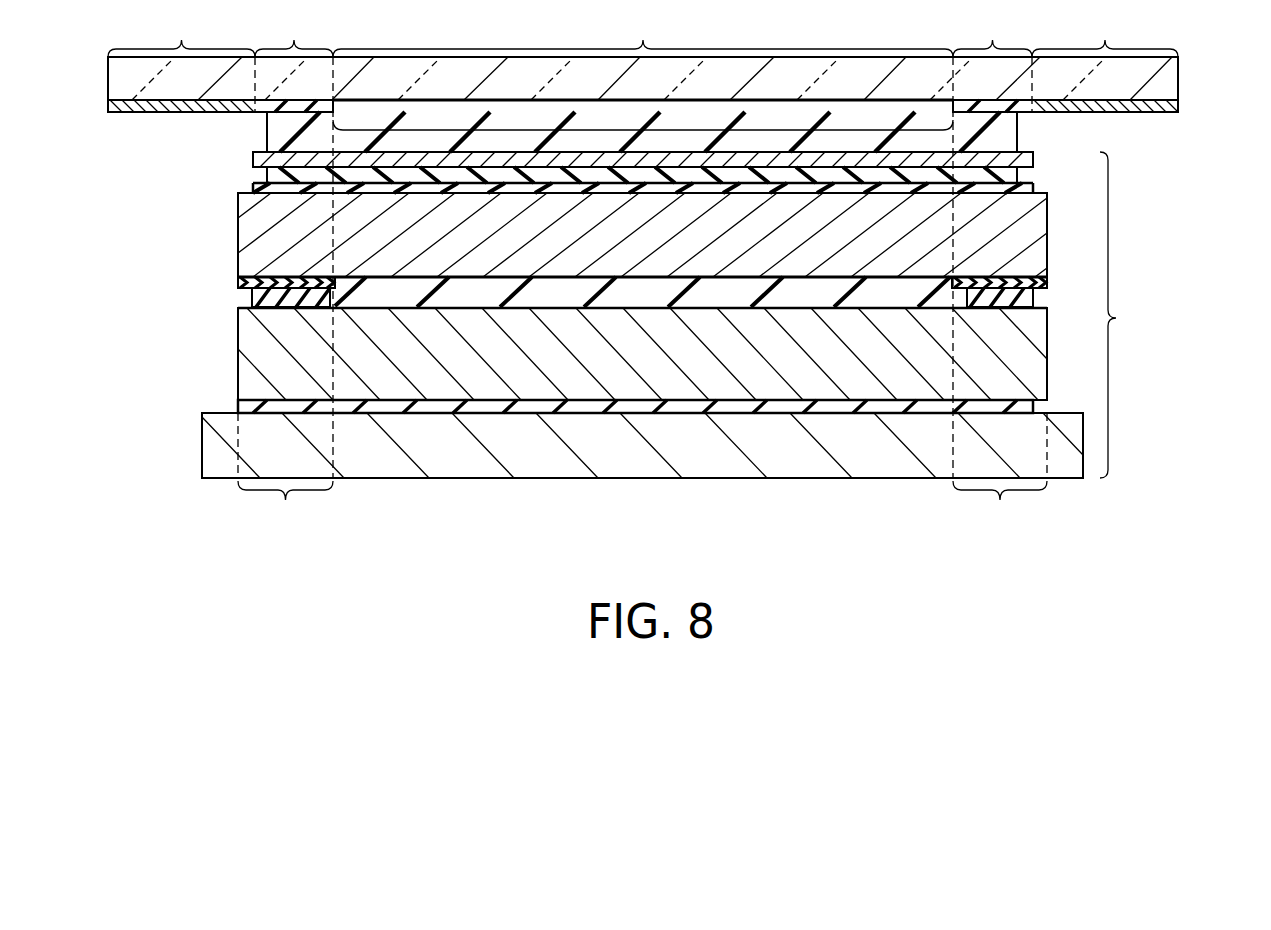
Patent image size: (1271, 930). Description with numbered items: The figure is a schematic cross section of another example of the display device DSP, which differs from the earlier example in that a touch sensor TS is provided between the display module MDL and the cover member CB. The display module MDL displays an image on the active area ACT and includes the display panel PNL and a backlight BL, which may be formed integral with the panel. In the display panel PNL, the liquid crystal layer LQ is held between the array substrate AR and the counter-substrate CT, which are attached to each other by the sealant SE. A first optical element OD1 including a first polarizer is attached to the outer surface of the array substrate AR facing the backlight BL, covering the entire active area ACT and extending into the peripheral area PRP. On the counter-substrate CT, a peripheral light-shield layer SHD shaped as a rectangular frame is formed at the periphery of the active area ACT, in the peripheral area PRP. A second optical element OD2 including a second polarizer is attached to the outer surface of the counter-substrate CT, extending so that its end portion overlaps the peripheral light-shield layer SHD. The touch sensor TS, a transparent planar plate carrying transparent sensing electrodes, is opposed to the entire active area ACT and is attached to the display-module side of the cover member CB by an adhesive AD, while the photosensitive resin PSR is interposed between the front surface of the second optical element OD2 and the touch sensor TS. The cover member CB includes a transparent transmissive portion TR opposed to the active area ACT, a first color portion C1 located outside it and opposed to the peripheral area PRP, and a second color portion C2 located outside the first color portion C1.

The cover member CB is at (1180, 78).
The second color portion C2 is at (643, 59).
The first color portion C1 is at (643, 32).
The transmissive portion TR is at (643, 242).
The active area ACT is at (652, 112).
The adhesive AD is at (530, 143).
The touch sensor TS is at (252, 162).
The second optical element OD2 is at (720, 190).
The photosensitive resin PSR is at (450, 175).
The counter-substrate CT is at (238, 219).
The peripheral light-shield layer SHD is at (240, 284).
The sealant SE is at (252, 301).
The liquid crystal layer LQ is at (392, 292).
The array substrate AR is at (238, 359).
The display panel PNL is at (237, 405).
The first optical element OD1 is at (603, 408).
The backlight BL is at (1070, 470).
The peripheral area PRP is at (642, 511).
The display module MDL is at (1136, 315).
The display device DSP is at (171, 540).